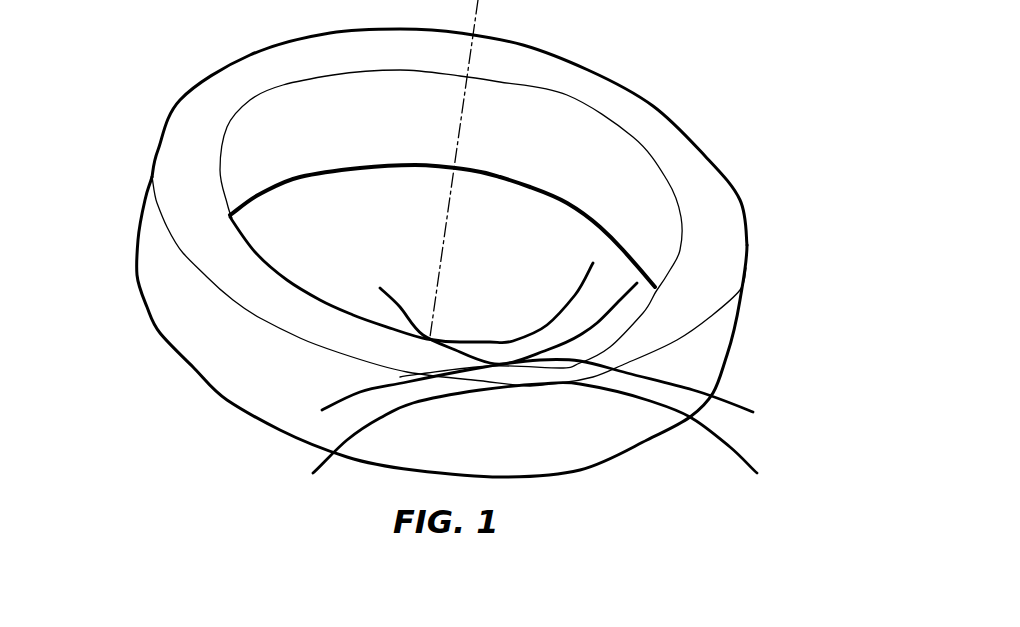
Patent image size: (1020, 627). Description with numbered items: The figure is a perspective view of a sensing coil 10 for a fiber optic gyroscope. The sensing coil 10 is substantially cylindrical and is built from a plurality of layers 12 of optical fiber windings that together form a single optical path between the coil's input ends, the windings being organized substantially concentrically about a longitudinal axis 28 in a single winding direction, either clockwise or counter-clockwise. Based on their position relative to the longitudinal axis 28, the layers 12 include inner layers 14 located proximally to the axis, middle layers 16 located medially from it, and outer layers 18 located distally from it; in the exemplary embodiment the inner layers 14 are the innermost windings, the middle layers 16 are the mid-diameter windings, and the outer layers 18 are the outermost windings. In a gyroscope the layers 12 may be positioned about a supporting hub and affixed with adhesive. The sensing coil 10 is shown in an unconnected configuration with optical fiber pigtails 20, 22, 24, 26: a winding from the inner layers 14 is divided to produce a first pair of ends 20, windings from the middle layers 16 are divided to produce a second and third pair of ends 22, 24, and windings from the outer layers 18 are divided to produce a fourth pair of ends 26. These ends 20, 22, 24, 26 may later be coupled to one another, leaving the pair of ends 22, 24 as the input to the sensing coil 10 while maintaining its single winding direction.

The sensing coil 10 is at (612, 35).
The layers of optical fiber windings 12 is at (188, 136).
The inner layers 14 is at (307, 143).
The middle layers 16 is at (273, 298).
The outer layers 18 is at (168, 318).
The first pair of ends 20 is at (575, 287).
The second pair of ends 22 is at (396, 293).
The third pair of ends 24 is at (736, 393).
The fourth pair of ends 26 is at (749, 443).
The longitudinal axis 28 is at (483, 2).